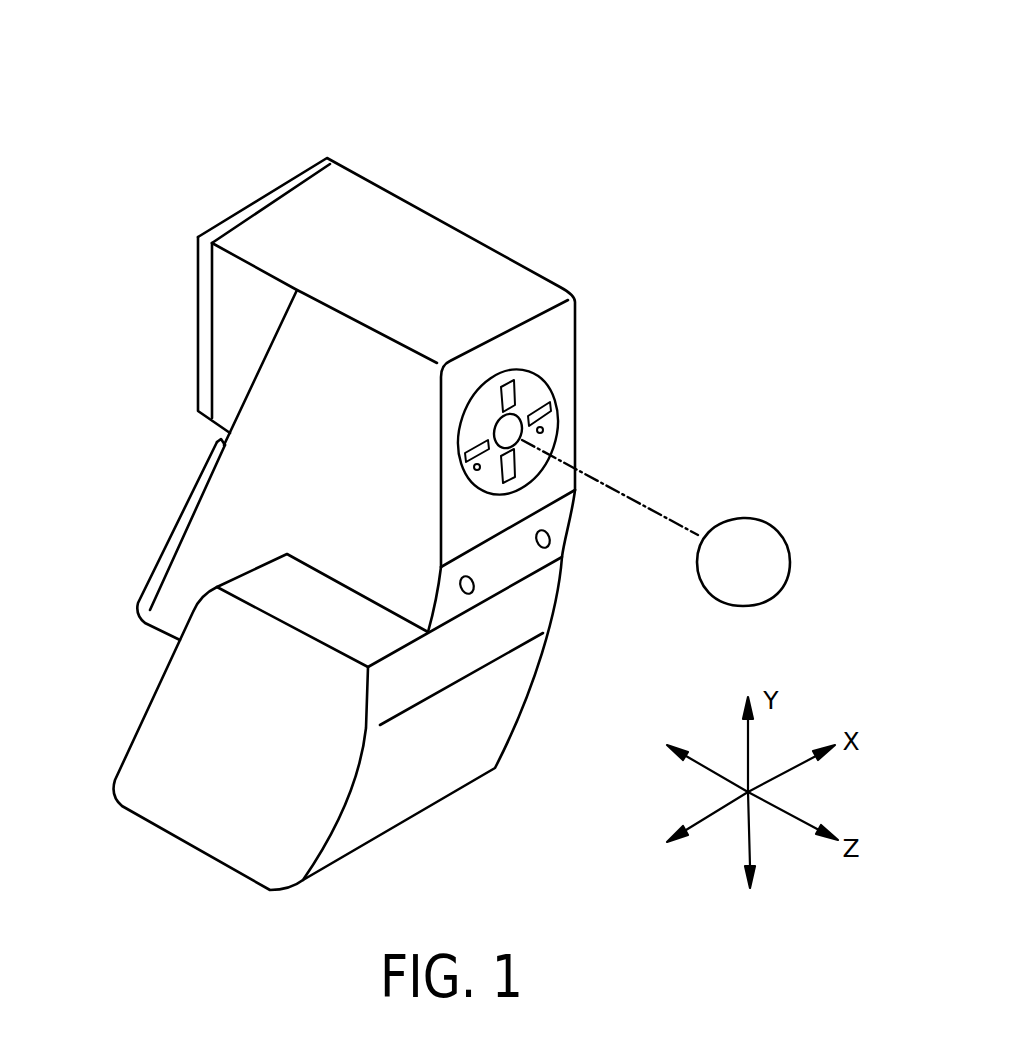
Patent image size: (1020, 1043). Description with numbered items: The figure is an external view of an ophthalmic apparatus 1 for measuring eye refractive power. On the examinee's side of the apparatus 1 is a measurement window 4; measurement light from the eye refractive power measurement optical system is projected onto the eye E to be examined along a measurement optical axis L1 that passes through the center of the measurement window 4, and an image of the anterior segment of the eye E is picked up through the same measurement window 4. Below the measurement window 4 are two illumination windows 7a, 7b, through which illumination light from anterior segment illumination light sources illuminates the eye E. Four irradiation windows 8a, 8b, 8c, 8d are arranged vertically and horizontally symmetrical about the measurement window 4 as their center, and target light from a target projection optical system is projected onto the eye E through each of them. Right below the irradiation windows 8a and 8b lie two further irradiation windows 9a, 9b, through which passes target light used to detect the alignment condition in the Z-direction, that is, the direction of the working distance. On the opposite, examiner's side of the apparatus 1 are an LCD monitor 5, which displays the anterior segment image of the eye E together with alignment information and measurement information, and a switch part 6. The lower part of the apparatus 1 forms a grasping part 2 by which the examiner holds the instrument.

The apparatus 1 is at (490, 135).
The grasping part 2 is at (158, 730).
The measurement window 4 is at (514, 434).
The LCD monitor 5 is at (198, 320).
The switch part 6 is at (173, 533).
The illumination window 7a is at (475, 584).
The illumination window 7b is at (548, 545).
The irradiation window 8a is at (486, 439).
The irradiation window 8b is at (549, 404).
The irradiation window 8c is at (530, 368).
The irradiation window 8d is at (506, 486).
The irradiation window 9a is at (474, 469).
The irradiation window 9b is at (545, 429).
The eye to be examined E is at (782, 545).
The measurement optical axis L1 is at (632, 498).